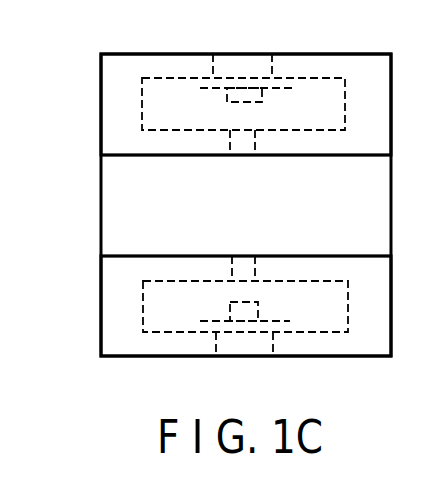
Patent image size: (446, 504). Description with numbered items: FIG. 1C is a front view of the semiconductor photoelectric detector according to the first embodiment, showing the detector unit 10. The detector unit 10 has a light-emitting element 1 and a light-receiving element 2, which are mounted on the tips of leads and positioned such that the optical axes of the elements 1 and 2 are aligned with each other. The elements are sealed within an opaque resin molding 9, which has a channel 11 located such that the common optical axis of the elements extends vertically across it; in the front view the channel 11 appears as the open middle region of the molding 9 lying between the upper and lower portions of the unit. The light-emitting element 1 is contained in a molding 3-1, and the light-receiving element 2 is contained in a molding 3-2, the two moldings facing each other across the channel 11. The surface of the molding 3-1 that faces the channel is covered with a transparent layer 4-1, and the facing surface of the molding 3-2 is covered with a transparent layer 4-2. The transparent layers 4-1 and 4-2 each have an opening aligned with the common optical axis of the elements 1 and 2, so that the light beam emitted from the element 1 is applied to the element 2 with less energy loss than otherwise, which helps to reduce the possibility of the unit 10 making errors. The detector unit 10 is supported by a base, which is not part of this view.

The light-emitting element 1 is at (243, 320).
The light-receiving element 2 is at (250, 81).
The molding containing the light-emitting element 3-1 is at (143, 297).
The molding containing the light-receiving element 3-2 is at (142, 109).
The transparent layer 4-1 is at (249, 255).
The transparent layer 4-2 is at (248, 156).
The opaque resin molding 9 is at (110, 83).
The detector unit 10 is at (91, 212).
The channel 11 is at (384, 197).